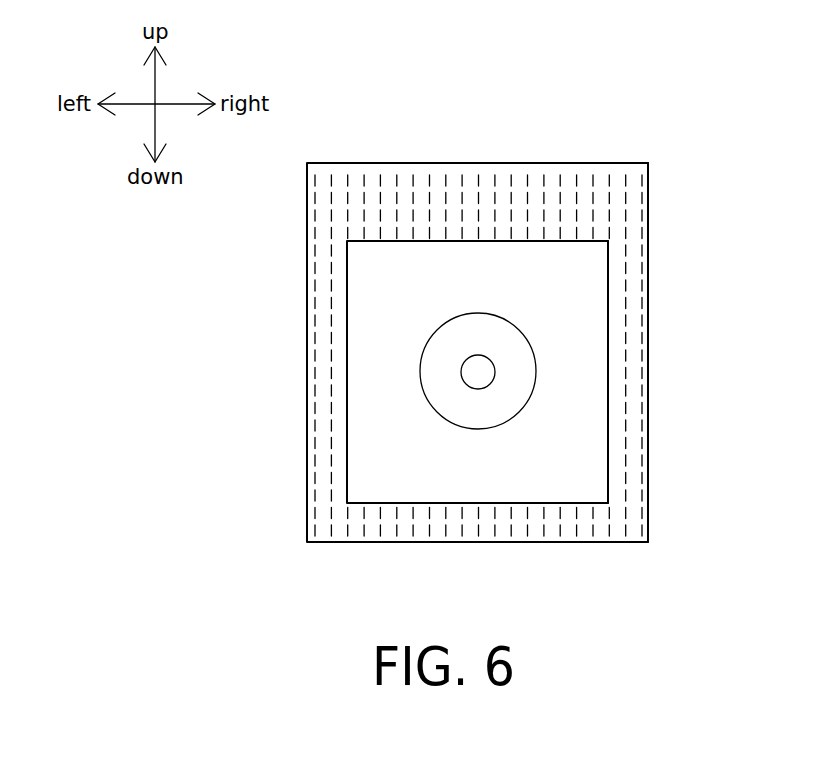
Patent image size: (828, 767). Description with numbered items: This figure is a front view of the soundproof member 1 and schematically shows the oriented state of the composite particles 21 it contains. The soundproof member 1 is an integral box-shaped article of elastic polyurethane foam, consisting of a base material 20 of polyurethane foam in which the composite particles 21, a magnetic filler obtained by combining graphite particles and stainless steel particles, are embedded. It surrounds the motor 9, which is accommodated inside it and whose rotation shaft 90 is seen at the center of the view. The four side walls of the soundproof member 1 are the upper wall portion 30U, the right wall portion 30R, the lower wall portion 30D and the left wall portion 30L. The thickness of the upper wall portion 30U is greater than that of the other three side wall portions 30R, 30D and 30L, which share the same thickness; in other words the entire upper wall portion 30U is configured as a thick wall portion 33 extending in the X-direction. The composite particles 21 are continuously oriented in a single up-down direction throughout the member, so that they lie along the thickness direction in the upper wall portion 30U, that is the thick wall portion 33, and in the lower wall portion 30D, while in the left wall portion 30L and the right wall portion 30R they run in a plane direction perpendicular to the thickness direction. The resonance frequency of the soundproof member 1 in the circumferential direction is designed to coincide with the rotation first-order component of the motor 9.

The soundproof member 1 is at (633, 178).
The motor 9 is at (376, 318).
The rotation shaft 90 is at (470, 371).
The base material 20 is at (635, 273).
The composite particles 21 is at (623, 336).
The thick wall portion 33 is at (482, 346).
The upper wall portion 30U is at (453, 217).
The lower wall portion 30D is at (487, 530).
The left wall portion 30L is at (327, 313).
The right wall portion 30R is at (628, 383).